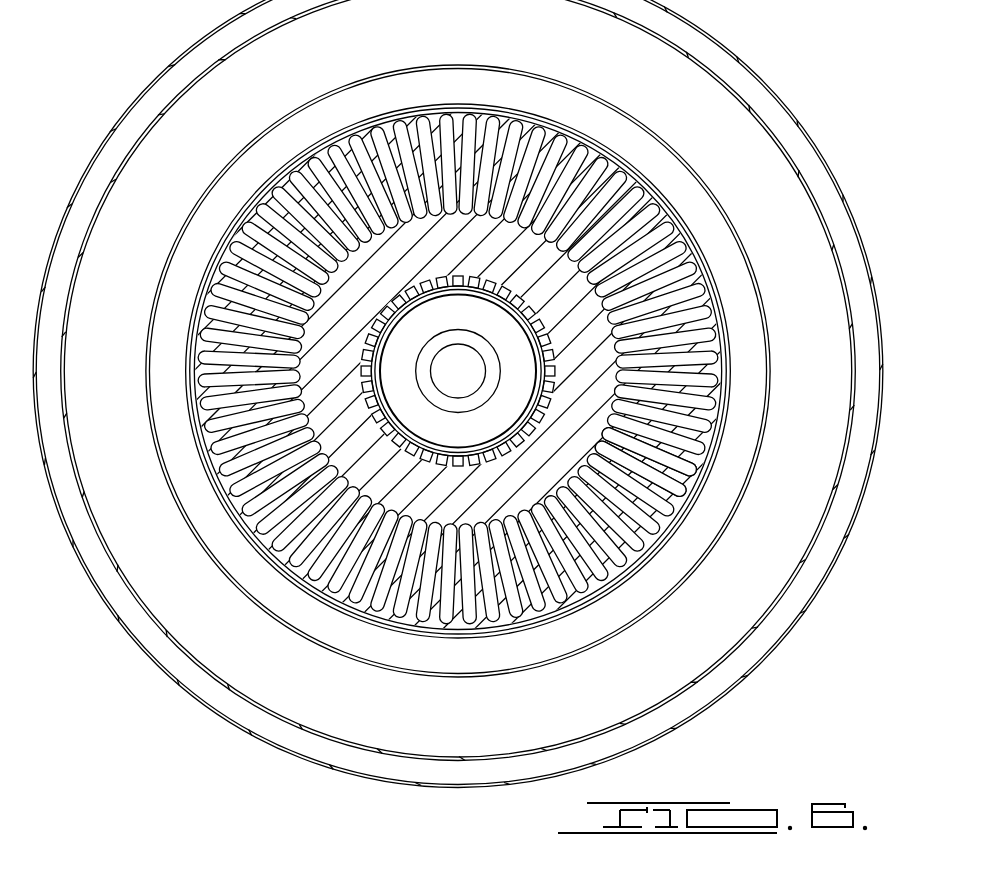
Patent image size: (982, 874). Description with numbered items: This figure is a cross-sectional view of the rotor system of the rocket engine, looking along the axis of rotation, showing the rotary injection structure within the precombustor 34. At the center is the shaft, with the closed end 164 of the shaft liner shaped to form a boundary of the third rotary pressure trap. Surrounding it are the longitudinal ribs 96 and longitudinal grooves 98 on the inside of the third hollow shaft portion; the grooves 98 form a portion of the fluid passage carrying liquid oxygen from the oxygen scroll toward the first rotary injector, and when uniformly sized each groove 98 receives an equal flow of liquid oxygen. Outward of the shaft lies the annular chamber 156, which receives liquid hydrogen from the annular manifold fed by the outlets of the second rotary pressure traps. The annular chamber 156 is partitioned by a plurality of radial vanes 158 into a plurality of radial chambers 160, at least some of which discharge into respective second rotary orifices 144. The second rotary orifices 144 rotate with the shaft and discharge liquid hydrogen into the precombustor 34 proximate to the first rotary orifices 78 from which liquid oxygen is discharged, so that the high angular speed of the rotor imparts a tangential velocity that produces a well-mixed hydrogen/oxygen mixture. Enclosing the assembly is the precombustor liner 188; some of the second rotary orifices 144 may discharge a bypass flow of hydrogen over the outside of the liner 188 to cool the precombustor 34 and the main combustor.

The precombustor 34 is at (831, 375).
The precombustor liner 188 is at (683, 53).
The annular chamber 156 is at (674, 555).
The first rotary orifice 78 is at (700, 268).
The second rotary orifice 144 is at (665, 220).
The radial chambers 160 is at (680, 483).
The radial vanes 158 is at (665, 490).
The longitudinal grooves 98 is at (375, 403).
The longitudinal ribs 96 is at (375, 394).
The closed end 164 is at (478, 385).